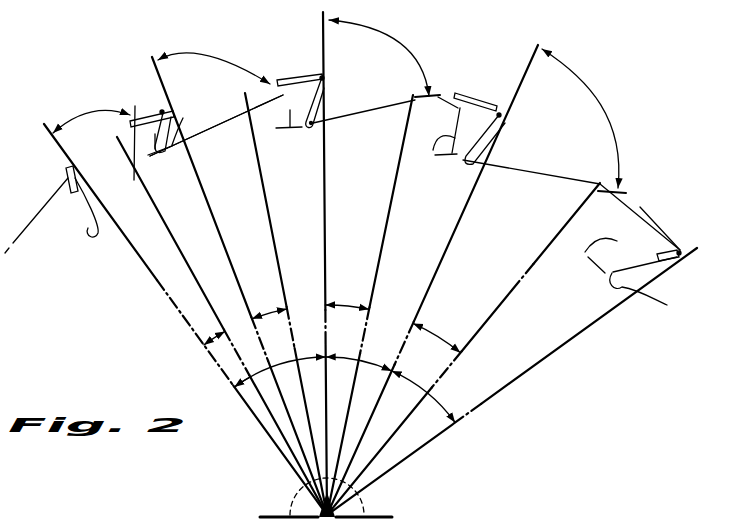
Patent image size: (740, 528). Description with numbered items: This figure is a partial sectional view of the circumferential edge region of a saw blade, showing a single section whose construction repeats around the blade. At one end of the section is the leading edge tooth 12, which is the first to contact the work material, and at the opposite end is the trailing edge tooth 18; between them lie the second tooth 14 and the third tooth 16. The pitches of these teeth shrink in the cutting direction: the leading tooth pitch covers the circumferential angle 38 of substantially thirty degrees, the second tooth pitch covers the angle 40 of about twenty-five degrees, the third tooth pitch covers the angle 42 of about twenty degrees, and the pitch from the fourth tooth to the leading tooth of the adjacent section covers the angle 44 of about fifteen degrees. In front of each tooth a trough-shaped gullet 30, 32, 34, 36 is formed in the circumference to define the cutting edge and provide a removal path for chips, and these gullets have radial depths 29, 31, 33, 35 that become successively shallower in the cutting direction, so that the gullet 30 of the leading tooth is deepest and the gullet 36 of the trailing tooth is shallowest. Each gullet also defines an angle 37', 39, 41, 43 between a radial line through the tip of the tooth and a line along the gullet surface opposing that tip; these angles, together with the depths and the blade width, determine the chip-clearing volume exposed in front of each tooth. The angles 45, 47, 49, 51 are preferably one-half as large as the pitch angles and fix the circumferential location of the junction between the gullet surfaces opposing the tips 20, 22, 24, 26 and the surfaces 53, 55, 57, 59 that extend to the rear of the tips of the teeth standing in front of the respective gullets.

The leading edge tooth 12 is at (69, 223).
The second tooth 14 is at (474, 140).
The third tooth 16 is at (300, 80).
The trailing edge tooth 18 is at (160, 114).
The tip of leading tooth 20 is at (680, 250).
The tip of second tooth 22 is at (499, 114).
The tip of third tooth 24 is at (320, 76).
The tip of trailing tooth 26 is at (162, 110).
The gullet depth 29 is at (587, 251).
The gullet 30 is at (88, 228).
The gullet depth 31 is at (433, 150).
The gullet 32 is at (493, 157).
The gullet depth 33 is at (296, 125).
The gullet 34 is at (312, 122).
The gullet depth 35 is at (154, 160).
The gullet 36 is at (172, 145).
The gullet angle 37' is at (91, 97).
The circumferential angle of leading tooth pitch 38 is at (441, 404).
The gullet angle 39 is at (603, 106).
The circumferential angle of second tooth pitch 40 is at (370, 360).
The gullet angle 41 is at (401, 45).
The circumferential angle of third tooth pitch 42 is at (302, 355).
The gullet angle 43 is at (223, 56).
The circumferential angle of fourth tooth pitch 44 is at (250, 388).
The junction angle 45 is at (441, 327).
The junction angle 47 is at (347, 302).
The junction angle 49 is at (267, 308).
The junction angle 51 is at (210, 331).
The rear tooth surface 53 is at (134, 180).
The rear tooth surface 55 is at (623, 209).
The rear tooth surface 57 is at (445, 99).
The rear tooth surface 59 is at (255, 110).